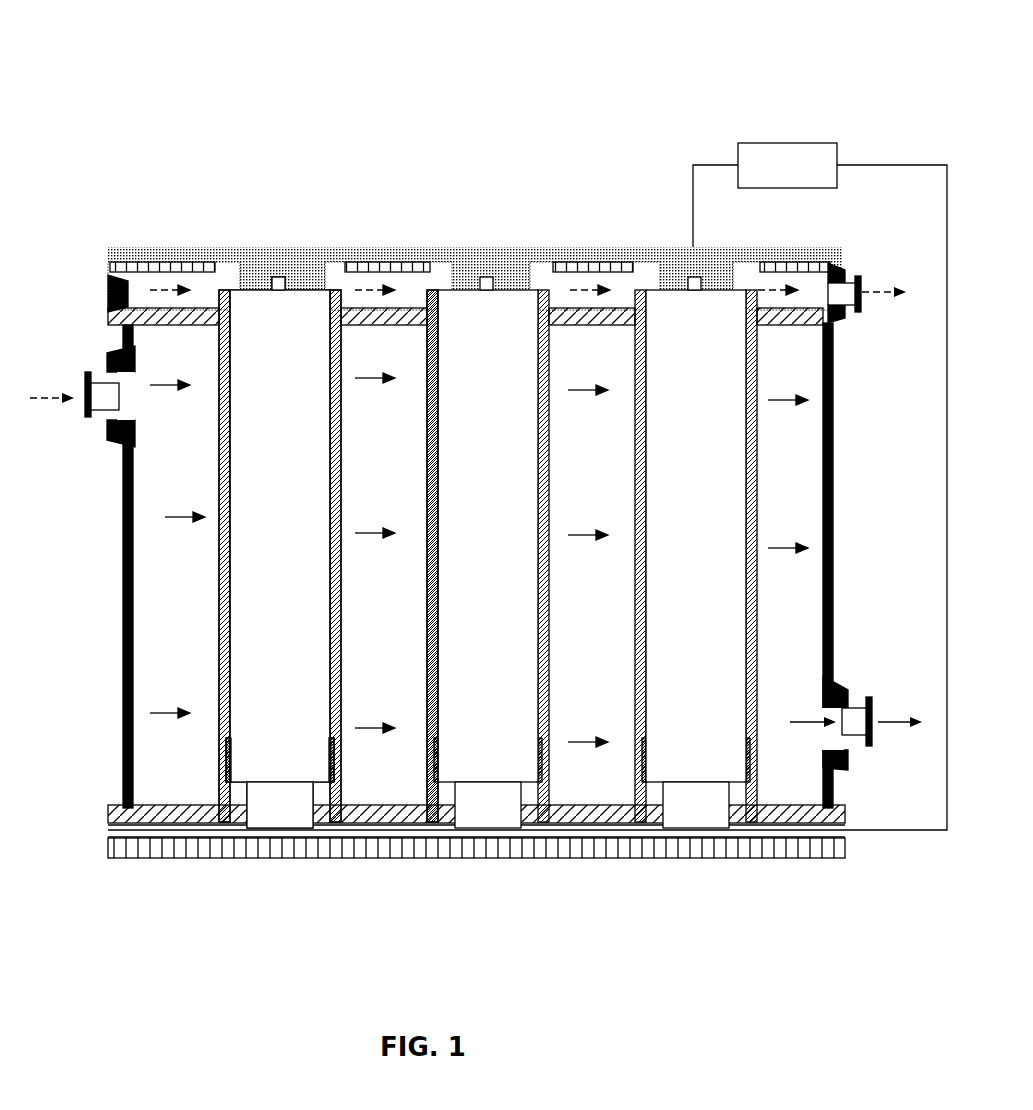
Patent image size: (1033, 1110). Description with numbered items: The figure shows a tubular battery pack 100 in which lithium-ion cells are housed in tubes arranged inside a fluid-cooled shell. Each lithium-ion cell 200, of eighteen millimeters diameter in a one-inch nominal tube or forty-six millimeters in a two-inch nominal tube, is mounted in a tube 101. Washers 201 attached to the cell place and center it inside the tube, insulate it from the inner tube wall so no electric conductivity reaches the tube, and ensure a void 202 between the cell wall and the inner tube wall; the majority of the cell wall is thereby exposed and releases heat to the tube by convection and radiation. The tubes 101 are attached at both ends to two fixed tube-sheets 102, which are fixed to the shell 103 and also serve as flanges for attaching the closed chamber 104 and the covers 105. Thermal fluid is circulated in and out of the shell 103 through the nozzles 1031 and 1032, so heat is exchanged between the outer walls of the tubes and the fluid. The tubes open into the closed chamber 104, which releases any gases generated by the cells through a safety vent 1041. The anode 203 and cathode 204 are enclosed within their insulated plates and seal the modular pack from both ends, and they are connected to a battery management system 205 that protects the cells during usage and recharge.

The tubular battery pack 100 is at (114, 128).
The tube 101 is at (636, 690).
The tube-sheet 102 is at (108, 316).
The shell 103 is at (125, 505).
The closed chamber 104 is at (108, 285).
The cover 105 is at (108, 262).
The lithium-ion cell 200 is at (282, 335).
The washer 201 is at (338, 300).
The void 202 is at (442, 340).
The anode 203 is at (281, 832).
The cathode 204 is at (575, 248).
The battery management system 205 is at (838, 153).
The nozzle 1031 is at (840, 690).
The nozzle 1032 is at (88, 417).
The safety vent 1041 is at (850, 310).